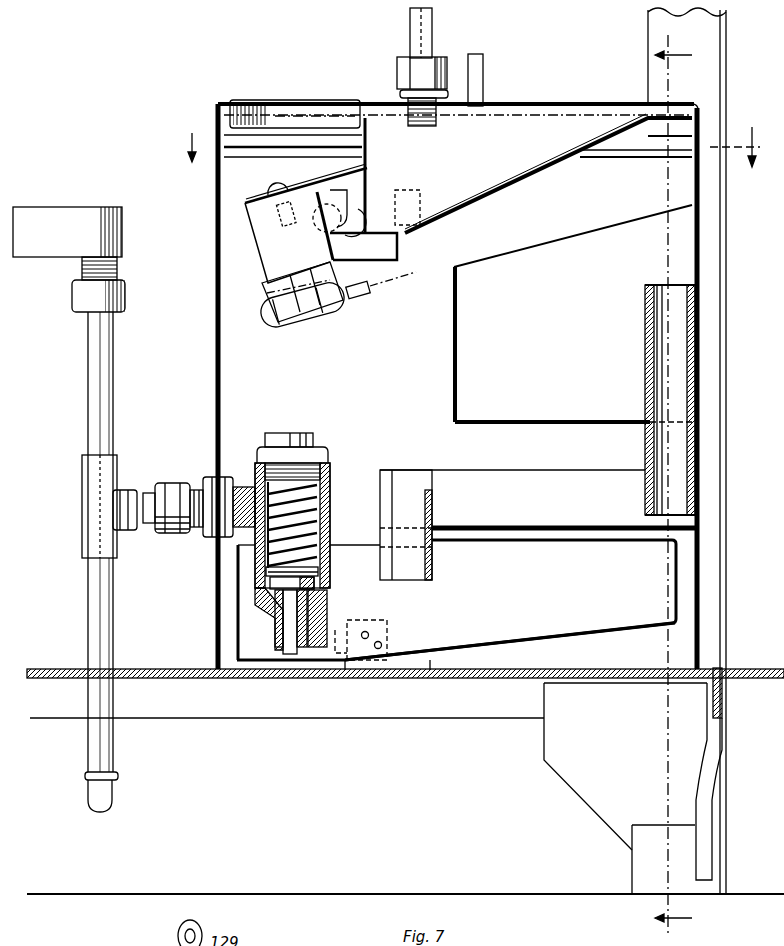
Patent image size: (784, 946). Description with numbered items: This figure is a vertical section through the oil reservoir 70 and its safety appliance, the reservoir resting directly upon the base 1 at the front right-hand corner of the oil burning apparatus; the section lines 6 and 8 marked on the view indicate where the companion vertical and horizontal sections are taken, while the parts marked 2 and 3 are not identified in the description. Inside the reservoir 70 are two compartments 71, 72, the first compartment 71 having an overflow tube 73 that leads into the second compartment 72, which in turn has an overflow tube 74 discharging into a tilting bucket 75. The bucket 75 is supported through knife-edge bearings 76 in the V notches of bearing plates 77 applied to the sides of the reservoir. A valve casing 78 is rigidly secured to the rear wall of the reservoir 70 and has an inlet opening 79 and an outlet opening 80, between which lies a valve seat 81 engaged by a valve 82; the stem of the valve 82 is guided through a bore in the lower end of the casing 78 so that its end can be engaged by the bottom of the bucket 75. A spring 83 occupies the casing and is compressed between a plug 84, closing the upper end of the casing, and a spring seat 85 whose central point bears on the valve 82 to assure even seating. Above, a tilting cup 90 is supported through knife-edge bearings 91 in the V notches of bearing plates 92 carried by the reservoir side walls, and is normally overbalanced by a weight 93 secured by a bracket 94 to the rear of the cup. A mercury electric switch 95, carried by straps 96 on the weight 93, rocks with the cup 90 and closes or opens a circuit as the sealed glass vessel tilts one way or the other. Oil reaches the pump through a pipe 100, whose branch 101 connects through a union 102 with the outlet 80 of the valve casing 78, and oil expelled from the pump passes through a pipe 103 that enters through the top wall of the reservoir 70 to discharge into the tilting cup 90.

The base 1 is at (55, 672).
The bracket block 2 is at (633, 781).
The wall support 3 is at (655, 78).
The section line 6 is at (675, 482).
The section line 8 is at (185, 147).
The oil reservoir 70 is at (213, 371).
The compartment 71 is at (455, 357).
The compartment 72 is at (516, 473).
The overflow tube 73 is at (645, 330).
The overflow tube 74 is at (438, 497).
The tilting bucket 75 is at (503, 600).
The knife-edge bearings 76 is at (374, 618).
The bearing plates 77 is at (349, 677).
The valve casing 78 is at (330, 499).
The inlet opening 79 is at (318, 613).
The outlet opening 80 is at (247, 490).
The valve seat 81 is at (325, 586).
The valve 82 is at (260, 610).
The spring 83 is at (319, 524).
The plug 84 is at (318, 452).
The spring seat 85 is at (315, 570).
The tilting cup 90 is at (514, 170).
The knife-edge bearings 91 is at (352, 224).
The bearing plates 92 is at (352, 236).
The weight 93 is at (289, 237).
The bracket 94 is at (322, 187).
The mercury electric switch 95 is at (308, 323).
The straps 96 is at (318, 276).
The pipe 100 is at (110, 598).
The branch 101 is at (152, 526).
The union 102 is at (183, 476).
The pipe 103 is at (427, 27).